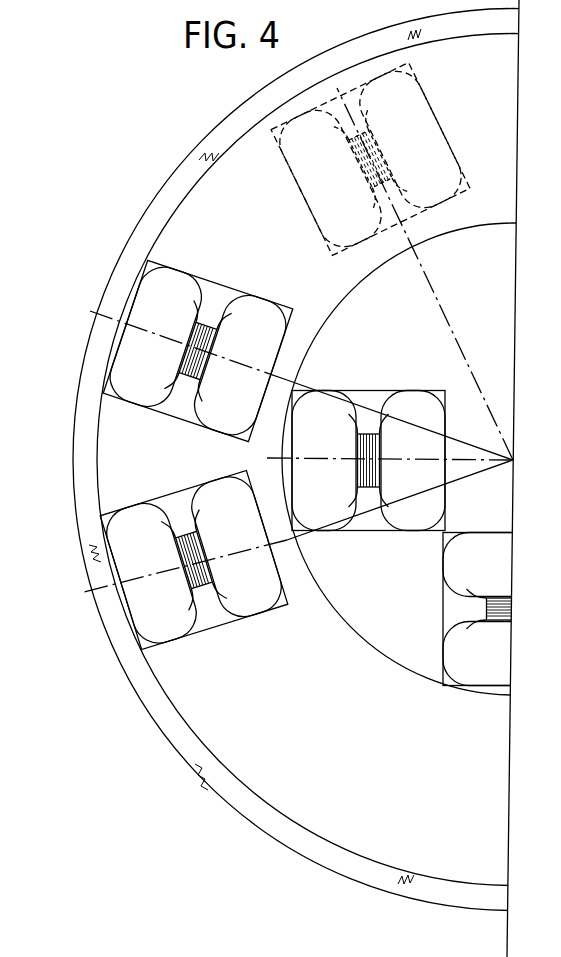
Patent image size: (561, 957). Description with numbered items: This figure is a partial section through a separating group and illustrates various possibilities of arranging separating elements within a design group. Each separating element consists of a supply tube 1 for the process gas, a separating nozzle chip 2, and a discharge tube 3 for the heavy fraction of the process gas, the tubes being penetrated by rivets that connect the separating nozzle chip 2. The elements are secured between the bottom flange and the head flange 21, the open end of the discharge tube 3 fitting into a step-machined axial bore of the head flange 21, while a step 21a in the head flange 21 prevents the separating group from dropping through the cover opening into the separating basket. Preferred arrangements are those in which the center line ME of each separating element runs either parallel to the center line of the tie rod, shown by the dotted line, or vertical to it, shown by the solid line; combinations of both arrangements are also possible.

The supply tube 1 is at (449, 133).
The separating nozzle chip 2 is at (181, 389).
The discharge tube 3 is at (289, 178).
The center line ME is at (405, 231).
The head flange 21 is at (338, 818).
The step 21a is at (90, 547).